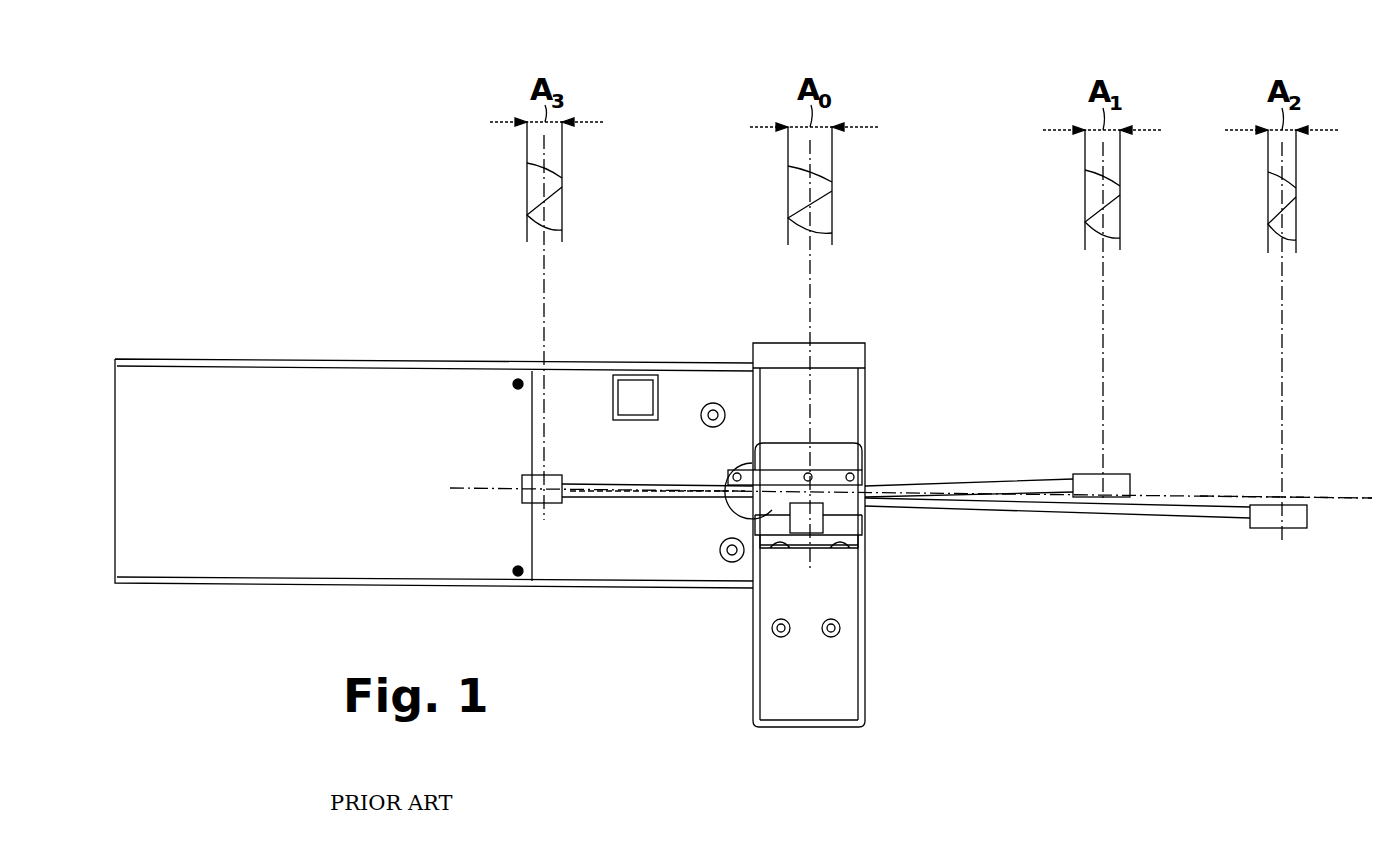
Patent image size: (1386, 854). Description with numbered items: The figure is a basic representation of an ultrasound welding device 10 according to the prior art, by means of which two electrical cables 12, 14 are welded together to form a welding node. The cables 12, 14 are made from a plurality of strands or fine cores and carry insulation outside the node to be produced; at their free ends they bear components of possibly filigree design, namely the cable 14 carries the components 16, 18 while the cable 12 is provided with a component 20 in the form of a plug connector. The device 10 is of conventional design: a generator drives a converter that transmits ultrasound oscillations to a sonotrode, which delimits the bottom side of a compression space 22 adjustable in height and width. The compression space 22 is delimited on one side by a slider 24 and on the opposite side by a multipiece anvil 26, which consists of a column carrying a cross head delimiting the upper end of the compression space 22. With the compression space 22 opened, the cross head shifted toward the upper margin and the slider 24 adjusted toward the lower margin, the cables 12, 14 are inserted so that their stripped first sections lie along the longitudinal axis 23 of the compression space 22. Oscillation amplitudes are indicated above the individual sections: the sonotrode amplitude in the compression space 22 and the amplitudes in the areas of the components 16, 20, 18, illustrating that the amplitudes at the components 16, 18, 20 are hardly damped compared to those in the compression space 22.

The ultrasound welding device 10 is at (333, 266).
The electrical cable 12 is at (1197, 513).
The electrical cable 14 is at (1045, 485).
The component 16 is at (1113, 487).
The component 18 is at (545, 475).
The component in the form of a plug connector 20 is at (1293, 522).
The compression space 22 is at (745, 510).
The longitudinal axis 23 is at (1347, 497).
The slider 24 is at (868, 525).
The multipiece anvil 26 is at (878, 385).